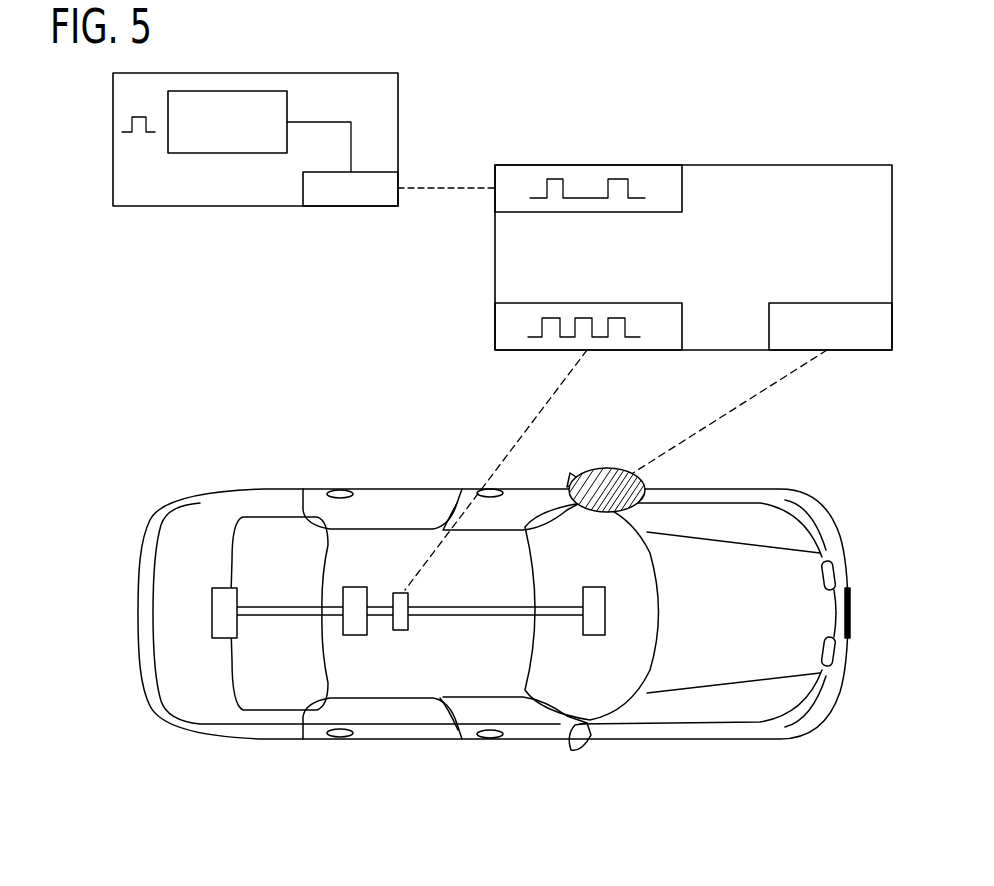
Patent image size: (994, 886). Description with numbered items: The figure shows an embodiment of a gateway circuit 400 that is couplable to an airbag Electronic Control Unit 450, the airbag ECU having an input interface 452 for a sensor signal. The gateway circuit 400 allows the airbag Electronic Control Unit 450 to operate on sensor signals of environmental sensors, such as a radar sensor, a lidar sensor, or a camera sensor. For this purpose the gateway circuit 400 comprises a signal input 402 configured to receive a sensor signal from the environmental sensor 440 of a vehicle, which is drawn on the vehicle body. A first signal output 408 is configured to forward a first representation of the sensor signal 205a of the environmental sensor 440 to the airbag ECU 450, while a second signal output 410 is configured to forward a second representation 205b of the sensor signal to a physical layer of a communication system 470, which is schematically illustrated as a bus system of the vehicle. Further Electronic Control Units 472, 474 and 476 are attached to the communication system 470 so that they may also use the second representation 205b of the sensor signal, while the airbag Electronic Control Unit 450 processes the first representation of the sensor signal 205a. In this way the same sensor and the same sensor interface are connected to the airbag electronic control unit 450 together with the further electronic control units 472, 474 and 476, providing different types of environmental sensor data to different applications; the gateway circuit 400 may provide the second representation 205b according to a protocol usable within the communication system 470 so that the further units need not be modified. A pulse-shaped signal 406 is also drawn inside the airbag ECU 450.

The gateway circuit 400 is at (830, 165).
The signal input 402 is at (830, 303).
The airbag deployment signal 406 is at (140, 117).
The first signal output 408 is at (682, 187).
The second signal output 410 is at (655, 303).
The first representation of the sensor signal 205a is at (552, 175).
The second representation of the sensor signal 205b is at (549, 318).
The environmental sensor 440 is at (607, 470).
The airbag Electronic Control Unit 450 is at (258, 207).
The input interface 452 is at (372, 172).
The communication system 470 is at (473, 617).
The further Electronic Control Unit 472 is at (212, 607).
The further Electronic Control Unit 474 is at (356, 587).
The further Electronic Control Unit 476 is at (595, 637).